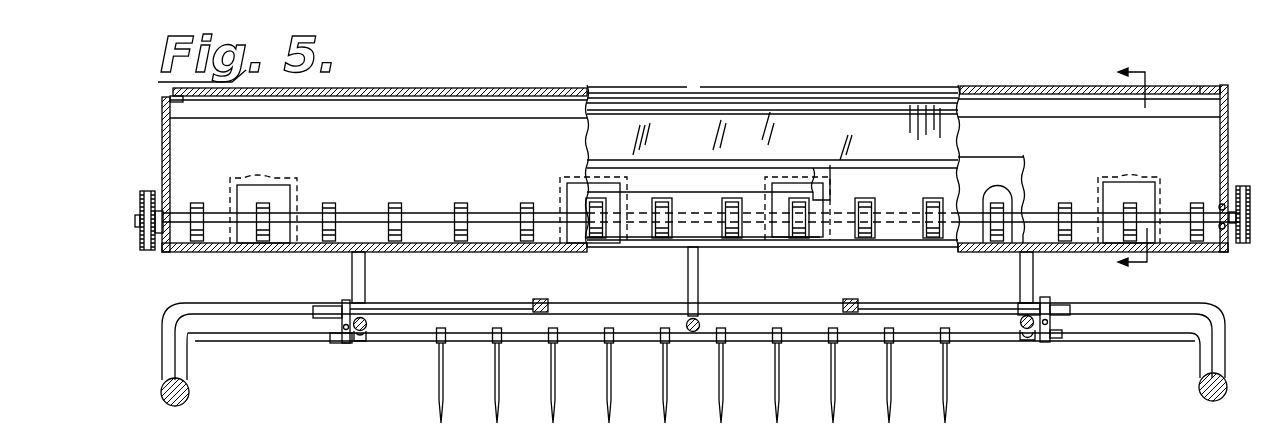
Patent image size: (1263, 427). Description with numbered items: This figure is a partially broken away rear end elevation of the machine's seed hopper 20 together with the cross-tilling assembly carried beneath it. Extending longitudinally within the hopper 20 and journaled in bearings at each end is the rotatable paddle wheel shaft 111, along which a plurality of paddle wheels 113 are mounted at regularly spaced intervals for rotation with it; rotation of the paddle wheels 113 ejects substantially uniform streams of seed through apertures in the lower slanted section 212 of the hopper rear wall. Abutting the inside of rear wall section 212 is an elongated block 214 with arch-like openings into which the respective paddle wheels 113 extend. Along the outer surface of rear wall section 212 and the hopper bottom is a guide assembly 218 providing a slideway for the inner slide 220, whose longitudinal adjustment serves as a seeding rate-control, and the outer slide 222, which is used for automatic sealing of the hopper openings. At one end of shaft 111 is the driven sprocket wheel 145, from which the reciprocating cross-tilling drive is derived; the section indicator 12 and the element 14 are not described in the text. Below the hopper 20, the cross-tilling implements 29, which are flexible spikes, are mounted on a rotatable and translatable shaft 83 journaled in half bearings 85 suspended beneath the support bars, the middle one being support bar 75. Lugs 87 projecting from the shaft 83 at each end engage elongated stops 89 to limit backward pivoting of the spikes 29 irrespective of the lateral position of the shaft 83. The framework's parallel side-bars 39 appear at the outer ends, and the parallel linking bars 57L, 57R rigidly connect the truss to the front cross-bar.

The hopper 20 is at (1262, 109).
The section line indicator 12 is at (1149, 171).
The driven sprocket wheel 145 is at (151, 197).
The paddle wheel shaft 111 is at (366, 213).
The paddle wheels 113 is at (472, 212).
The guide assembly 218 is at (756, 180).
The outer slide 222 is at (826, 188).
The inner slide 220 is at (892, 180).
The lower slanted section of hopper rear wall 212 is at (960, 168).
The elongated block 214 is at (1022, 175).
The drive gear 14 is at (1250, 185).
The side-bars 39 is at (186, 376).
The left linking bar 57L is at (537, 298).
The right linking bar 57R is at (850, 298).
The support bar 75 is at (696, 322).
The shaft 83 is at (702, 340).
The cross-tilling implements 29 is at (615, 385).
The stops 89 is at (330, 306).
The half bearings 85 is at (358, 342).
The lugs 87 is at (340, 338).